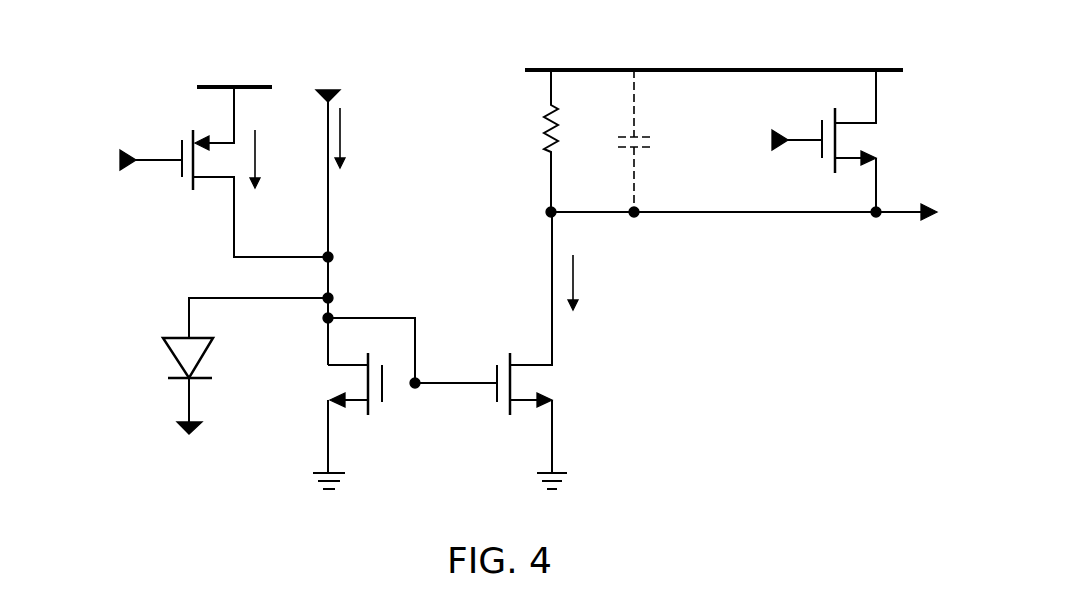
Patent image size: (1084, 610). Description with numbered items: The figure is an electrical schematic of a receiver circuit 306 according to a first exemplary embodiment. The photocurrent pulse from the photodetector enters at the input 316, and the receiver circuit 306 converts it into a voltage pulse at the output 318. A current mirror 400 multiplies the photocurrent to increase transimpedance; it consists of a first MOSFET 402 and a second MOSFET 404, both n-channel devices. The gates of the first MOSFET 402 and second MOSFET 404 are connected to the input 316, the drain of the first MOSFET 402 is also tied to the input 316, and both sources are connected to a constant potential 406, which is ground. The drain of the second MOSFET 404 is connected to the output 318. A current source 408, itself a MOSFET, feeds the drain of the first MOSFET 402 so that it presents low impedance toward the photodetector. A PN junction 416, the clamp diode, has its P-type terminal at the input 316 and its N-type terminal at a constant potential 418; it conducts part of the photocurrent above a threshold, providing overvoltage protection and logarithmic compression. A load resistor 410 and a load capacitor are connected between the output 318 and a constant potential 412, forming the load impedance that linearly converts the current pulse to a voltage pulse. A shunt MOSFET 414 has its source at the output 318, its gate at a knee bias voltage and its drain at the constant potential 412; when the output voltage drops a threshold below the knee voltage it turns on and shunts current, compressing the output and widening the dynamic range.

The receiver circuit 306 is at (663, 457).
The input 316 is at (336, 96).
The output 318 is at (893, 216).
The current mirror 400 is at (443, 460).
The first MOSFET 402 is at (371, 414).
The second MOSFET 404 is at (508, 353).
The constant potential 406 is at (318, 471).
The current source 408 is at (178, 182).
The resistor RL 410 is at (545, 117).
The constant potential 412 is at (749, 68).
The shunt MOSFET 414 is at (835, 108).
The PN junction 416 is at (174, 336).
The constant potential 418 is at (183, 426).